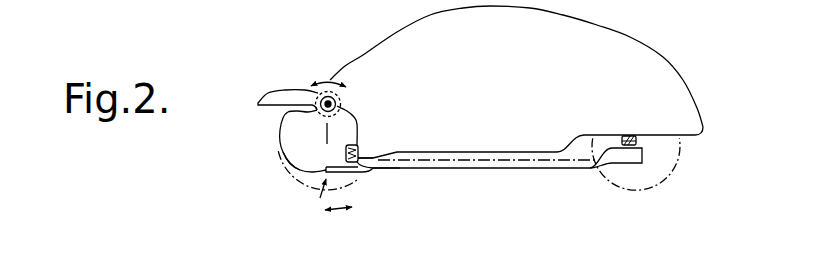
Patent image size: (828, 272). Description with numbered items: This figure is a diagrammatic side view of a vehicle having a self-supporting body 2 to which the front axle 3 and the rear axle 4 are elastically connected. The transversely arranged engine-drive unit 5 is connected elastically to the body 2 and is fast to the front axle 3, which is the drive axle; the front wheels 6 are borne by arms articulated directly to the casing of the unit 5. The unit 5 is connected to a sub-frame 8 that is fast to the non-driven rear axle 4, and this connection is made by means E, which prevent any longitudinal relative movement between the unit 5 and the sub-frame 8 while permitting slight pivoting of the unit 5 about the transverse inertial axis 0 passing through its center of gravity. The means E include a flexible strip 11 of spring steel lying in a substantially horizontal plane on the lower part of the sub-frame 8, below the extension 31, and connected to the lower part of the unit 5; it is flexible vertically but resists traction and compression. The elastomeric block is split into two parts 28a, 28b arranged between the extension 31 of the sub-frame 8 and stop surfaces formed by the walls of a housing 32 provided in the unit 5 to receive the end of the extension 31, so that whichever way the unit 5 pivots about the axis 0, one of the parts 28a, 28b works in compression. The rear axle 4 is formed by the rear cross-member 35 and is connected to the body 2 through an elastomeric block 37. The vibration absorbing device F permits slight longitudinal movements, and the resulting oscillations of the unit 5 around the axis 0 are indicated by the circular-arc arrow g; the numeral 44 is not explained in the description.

The self-supporting body 2 is at (632, 37).
The front axle 3 is at (280, 169).
The rear axle 4 is at (684, 157).
The engine drive unit 5 is at (290, 128).
The front wheels 6 is at (297, 180).
The sub-frame 8 is at (485, 166).
The flexible strip 11 is at (338, 170).
The block part 28a is at (358, 152).
The block part 28b is at (393, 178).
The extension of the sub-frame 31 is at (358, 153).
The housing 32 is at (356, 150).
The rear cross-member 35 is at (630, 158).
The elastomeric block 37 is at (628, 136).
The element 44 is at (357, 265).
The transverse inertial axis 0 is at (327, 140).
The vibration absorbing device F is at (316, 97).
The oscillation arrow g is at (327, 80).
The connecting means E is at (328, 203).